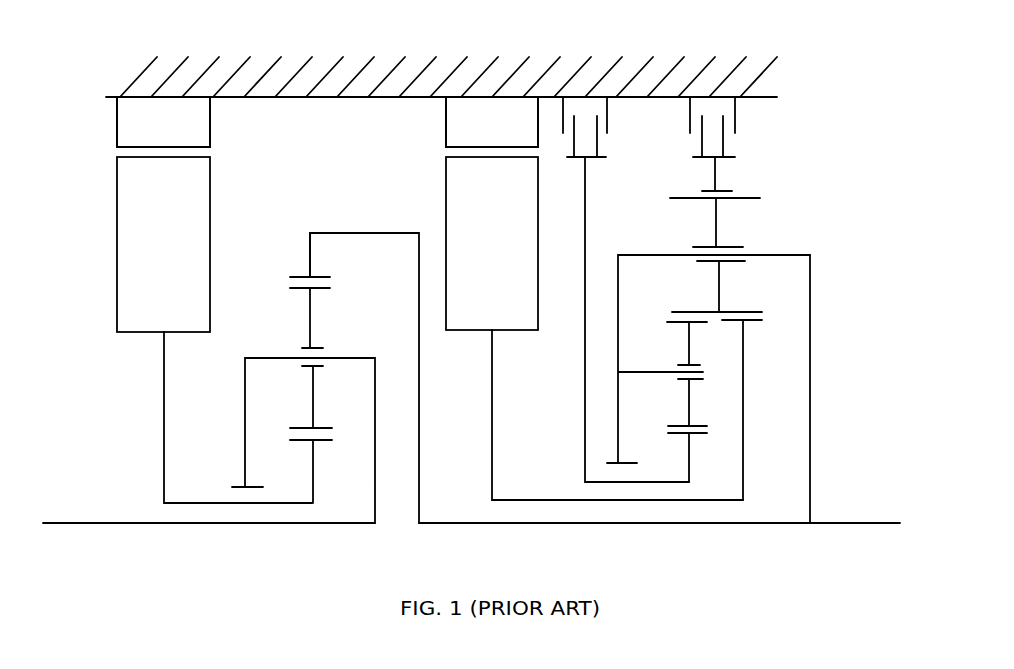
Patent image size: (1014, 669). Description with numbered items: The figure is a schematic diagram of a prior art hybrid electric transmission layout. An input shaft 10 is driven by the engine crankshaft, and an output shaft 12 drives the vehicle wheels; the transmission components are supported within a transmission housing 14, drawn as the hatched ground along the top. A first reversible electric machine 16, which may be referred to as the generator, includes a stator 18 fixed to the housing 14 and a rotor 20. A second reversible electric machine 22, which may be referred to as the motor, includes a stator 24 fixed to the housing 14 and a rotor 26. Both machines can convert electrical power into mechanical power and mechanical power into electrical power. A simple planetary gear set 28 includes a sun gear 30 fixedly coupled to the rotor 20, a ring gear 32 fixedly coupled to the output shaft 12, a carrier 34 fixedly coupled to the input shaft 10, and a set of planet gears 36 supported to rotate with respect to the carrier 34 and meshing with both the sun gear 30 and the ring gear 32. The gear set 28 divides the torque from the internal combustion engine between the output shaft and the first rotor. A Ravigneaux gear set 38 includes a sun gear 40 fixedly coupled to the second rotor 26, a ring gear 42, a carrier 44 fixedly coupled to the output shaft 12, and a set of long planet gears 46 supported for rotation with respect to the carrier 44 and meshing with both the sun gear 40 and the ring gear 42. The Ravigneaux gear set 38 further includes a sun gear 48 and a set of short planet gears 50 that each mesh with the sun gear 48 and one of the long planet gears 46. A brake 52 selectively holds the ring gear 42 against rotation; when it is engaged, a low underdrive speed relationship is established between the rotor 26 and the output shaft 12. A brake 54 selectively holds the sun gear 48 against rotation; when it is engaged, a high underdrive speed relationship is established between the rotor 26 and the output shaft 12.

The input shaft 10 is at (90, 527).
The output shaft 12 is at (863, 523).
The transmission housing 14 is at (337, 62).
The first reversible electric machine 16 is at (163, 88).
The stator 18 is at (117, 118).
The rotor 20 is at (210, 248).
The second reversible electric machine 22 is at (492, 88).
The stator 24 is at (445, 126).
The rotor 26 is at (537, 252).
The simple planetary gear set 28 is at (355, 399).
The sun gear 30 is at (313, 473).
The ring gear 32 is at (310, 248).
The carrier 34 is at (245, 405).
The planet gears 36 is at (313, 320).
The Ravigneaux gear set 38 is at (715, 556).
The sun gear 40 is at (742, 443).
The ring gear 42 is at (715, 173).
The carrier 44 is at (615, 268).
The long planet gears 46 is at (717, 225).
The sun gear 48 is at (685, 465).
The short planet gears 50 is at (688, 343).
The brake 52 is at (735, 123).
The brake 54 is at (608, 121).